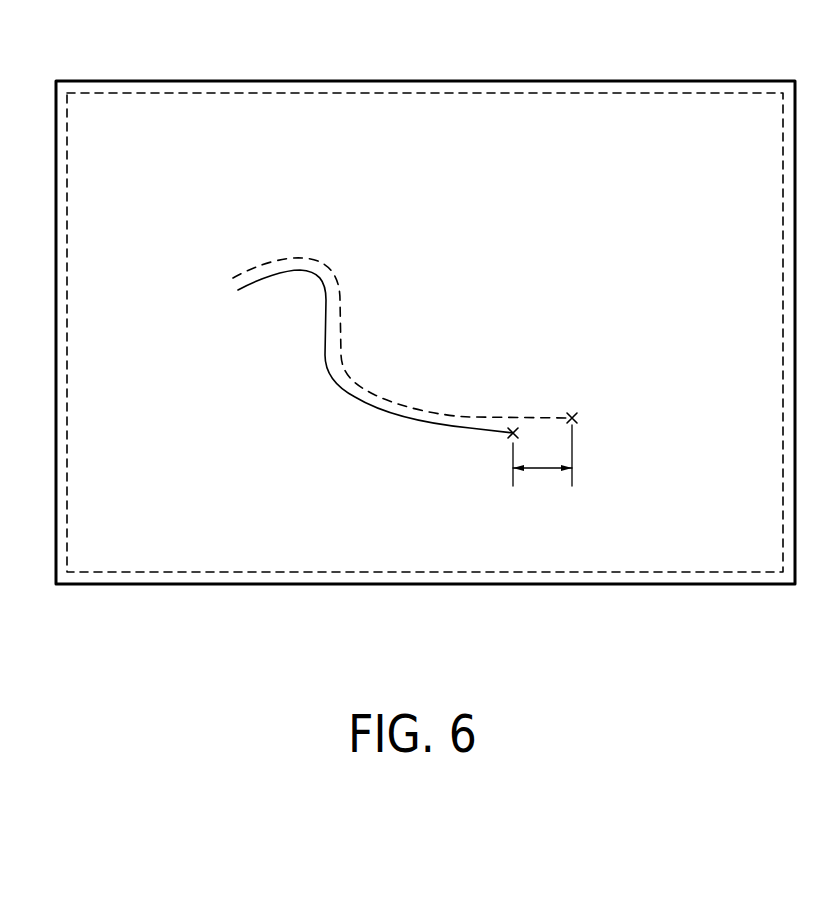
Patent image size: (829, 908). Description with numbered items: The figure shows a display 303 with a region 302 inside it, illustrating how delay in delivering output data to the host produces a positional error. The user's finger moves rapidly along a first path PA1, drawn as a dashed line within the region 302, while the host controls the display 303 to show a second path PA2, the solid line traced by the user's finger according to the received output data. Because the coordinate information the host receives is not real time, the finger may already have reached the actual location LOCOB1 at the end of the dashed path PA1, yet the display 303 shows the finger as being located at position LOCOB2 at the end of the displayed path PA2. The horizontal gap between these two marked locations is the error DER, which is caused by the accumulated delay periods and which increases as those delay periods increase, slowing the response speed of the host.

The display 303 is at (522, 81).
The region 302 is at (702, 93).
The path PA1 is at (320, 258).
The path PA2 is at (320, 372).
The location LOCOB1 is at (578, 402).
The position LOCOB2 is at (509, 448).
The error DER is at (542, 466).